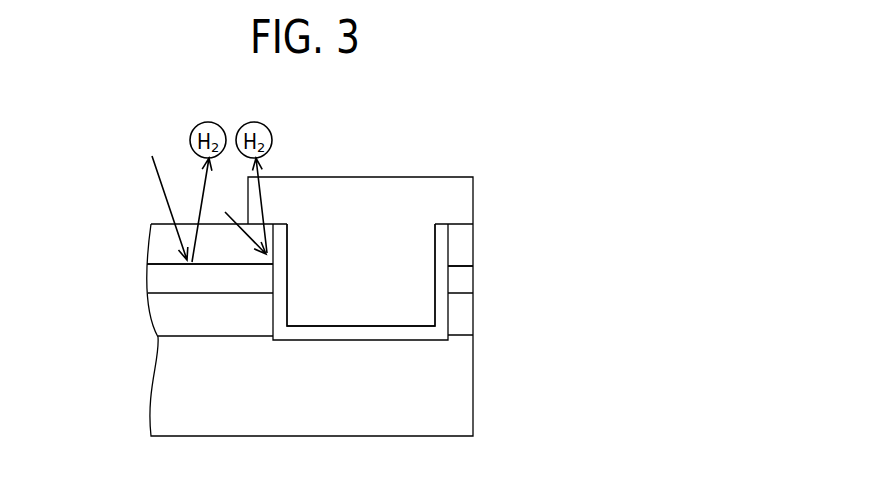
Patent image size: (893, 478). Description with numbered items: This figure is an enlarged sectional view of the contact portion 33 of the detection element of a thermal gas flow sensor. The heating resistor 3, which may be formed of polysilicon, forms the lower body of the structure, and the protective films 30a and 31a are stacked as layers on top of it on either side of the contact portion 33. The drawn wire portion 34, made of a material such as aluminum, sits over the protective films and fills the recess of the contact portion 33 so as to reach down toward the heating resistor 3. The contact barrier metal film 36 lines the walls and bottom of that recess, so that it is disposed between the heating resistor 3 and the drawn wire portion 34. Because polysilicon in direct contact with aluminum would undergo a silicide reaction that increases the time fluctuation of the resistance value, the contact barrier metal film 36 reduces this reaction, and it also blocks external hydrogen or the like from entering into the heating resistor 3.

The heating resistor 3 is at (452, 380).
The protective film 30a is at (160, 240).
The protective film 31a is at (160, 282).
The contact portion 33 is at (348, 265).
The drawn wire portion 34 is at (397, 206).
The contact barrier metal film 36 is at (442, 247).